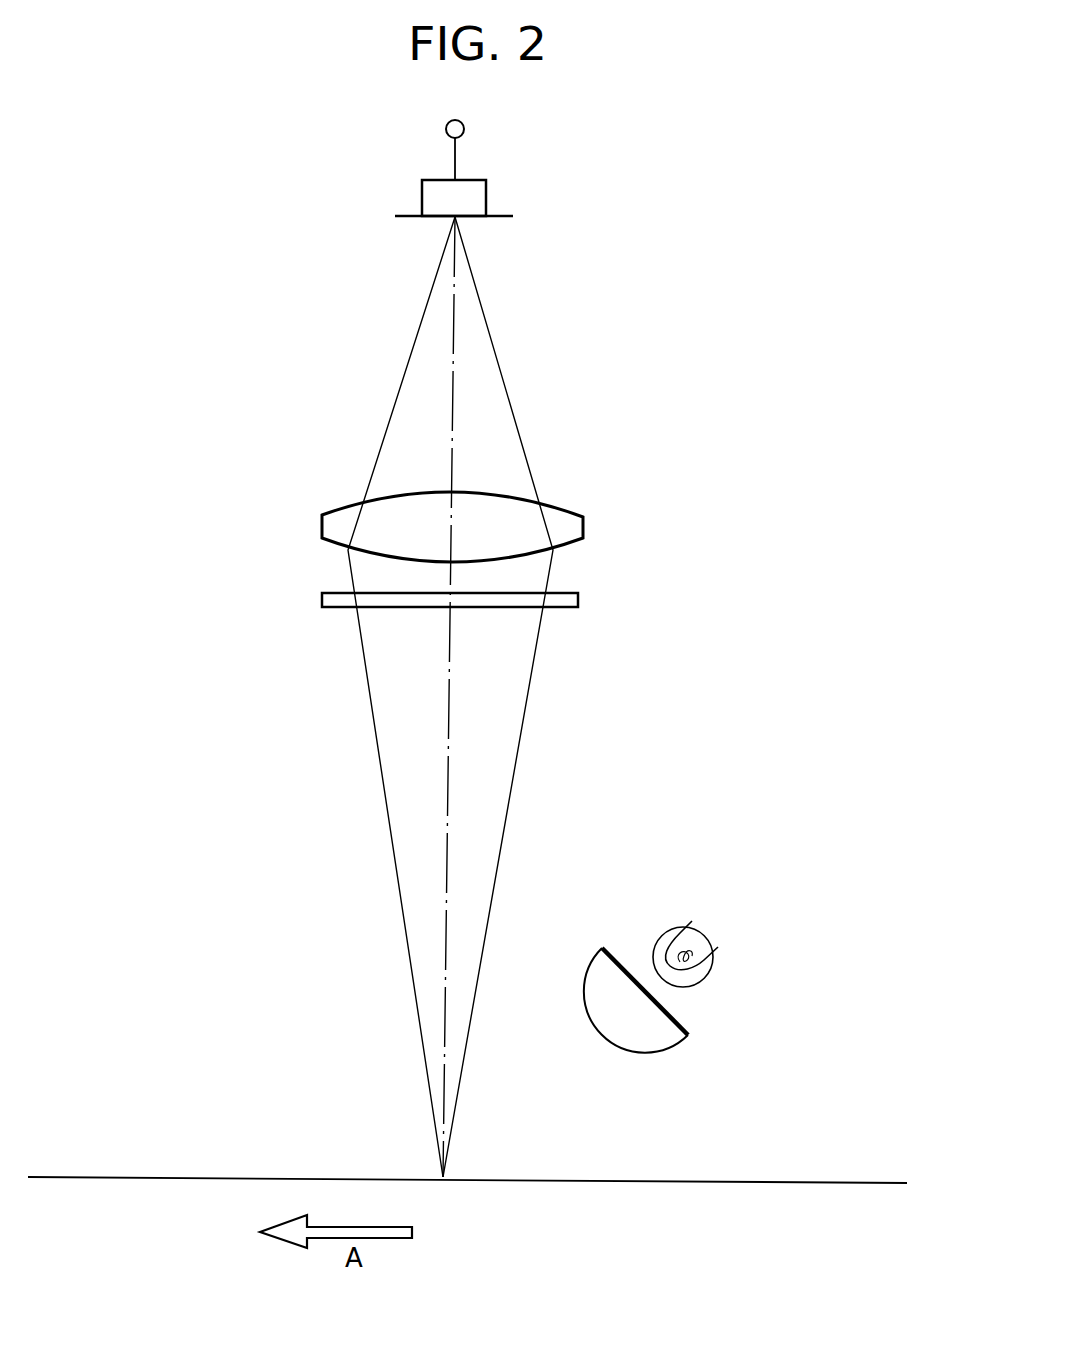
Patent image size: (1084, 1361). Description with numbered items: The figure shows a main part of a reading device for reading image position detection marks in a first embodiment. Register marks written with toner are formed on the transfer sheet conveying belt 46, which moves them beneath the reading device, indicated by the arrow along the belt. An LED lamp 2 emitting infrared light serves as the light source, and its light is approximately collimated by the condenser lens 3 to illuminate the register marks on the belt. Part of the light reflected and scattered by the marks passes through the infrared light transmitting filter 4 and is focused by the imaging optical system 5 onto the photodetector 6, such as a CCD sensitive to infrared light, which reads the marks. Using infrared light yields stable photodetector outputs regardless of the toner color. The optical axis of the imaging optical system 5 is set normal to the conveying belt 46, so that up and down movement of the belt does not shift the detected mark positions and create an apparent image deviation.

The LED lamp 2 is at (668, 928).
The condenser lens 3 is at (608, 947).
The infrared light transmitting filter 4 is at (578, 601).
The imaging optical system 5 is at (576, 512).
The photodetector 6 is at (486, 197).
The transfer sheet conveying belt 46 is at (787, 1183).